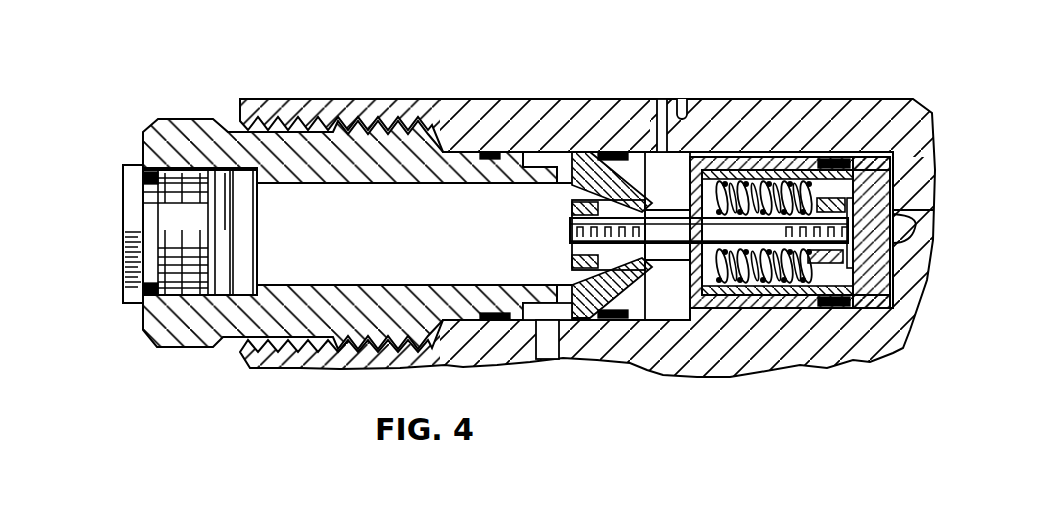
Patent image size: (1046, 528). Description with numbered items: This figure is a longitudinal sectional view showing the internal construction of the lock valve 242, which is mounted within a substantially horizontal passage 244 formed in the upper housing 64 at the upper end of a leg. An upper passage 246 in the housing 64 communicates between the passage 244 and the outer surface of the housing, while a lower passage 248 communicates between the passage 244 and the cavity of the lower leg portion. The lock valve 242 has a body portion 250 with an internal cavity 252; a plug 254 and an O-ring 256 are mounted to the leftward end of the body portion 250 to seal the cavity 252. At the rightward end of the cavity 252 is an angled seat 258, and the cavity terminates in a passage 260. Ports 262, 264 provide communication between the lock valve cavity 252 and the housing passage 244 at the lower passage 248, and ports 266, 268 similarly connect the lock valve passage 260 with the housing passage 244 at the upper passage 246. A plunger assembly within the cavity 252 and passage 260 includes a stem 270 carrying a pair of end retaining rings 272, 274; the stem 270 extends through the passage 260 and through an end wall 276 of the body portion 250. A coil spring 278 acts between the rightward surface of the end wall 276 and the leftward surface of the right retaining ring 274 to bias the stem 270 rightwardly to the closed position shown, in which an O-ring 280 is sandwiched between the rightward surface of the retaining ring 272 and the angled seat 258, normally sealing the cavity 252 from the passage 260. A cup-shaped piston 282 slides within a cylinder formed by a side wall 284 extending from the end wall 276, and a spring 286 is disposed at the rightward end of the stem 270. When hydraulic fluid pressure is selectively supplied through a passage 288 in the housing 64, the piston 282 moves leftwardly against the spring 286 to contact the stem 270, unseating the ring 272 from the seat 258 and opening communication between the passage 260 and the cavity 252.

The lock valve 242 is at (226, 104).
The upper housing 64 is at (425, 90).
The horizontal passage 244 is at (665, 100).
The upper passage 246 is at (682, 100).
The lower passage 248 is at (557, 338).
The body portion 250 is at (230, 338).
The internal cavity 252 is at (397, 242).
The plug 254 is at (124, 302).
The O-ring 256 is at (142, 180).
The angled seat 258 is at (600, 152).
The passage 260 is at (645, 252).
The port 262 is at (537, 186).
The port 264 is at (545, 282).
The port 266 is at (660, 170).
The port 268 is at (630, 352).
The stem 270 is at (660, 262).
The end retaining ring 272 is at (572, 210).
The end retaining ring 274 is at (833, 262).
The end wall 276 is at (737, 190).
The coil spring 278 is at (782, 192).
The O-ring 280 is at (592, 272).
The cup-shaped piston 282 is at (887, 312).
The side wall 284 is at (703, 312).
The spring 286 is at (762, 300).
The passage 288 is at (931, 118).